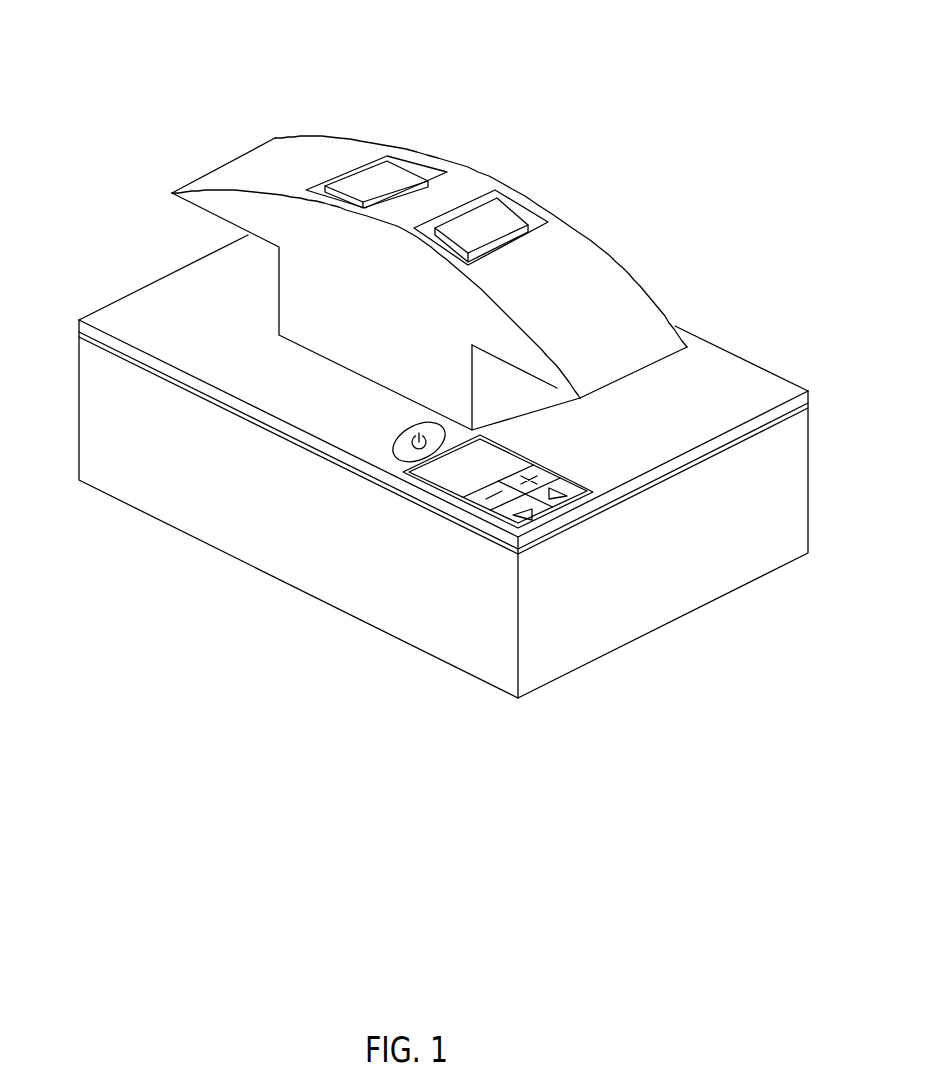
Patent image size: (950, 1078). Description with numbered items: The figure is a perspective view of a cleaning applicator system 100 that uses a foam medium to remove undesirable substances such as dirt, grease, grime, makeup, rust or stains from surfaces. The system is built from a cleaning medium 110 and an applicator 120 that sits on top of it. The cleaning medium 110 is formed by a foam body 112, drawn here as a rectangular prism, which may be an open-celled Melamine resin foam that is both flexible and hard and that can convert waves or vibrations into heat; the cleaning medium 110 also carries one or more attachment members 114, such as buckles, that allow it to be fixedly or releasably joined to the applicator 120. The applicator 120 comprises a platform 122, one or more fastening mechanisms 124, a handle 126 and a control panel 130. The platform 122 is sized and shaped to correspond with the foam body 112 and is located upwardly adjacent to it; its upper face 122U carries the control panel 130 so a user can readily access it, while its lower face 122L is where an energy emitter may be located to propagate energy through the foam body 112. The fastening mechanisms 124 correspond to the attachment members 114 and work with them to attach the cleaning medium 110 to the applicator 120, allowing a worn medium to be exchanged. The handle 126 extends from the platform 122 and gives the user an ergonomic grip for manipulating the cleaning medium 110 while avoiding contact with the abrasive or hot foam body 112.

The cleaning applicator system 100 is at (449, 367).
The cleaning medium 110 is at (479, 466).
The foam body 112 is at (413, 647).
The attachment members 114 is at (403, 170).
The applicator 120 is at (352, 283).
The platform 122 is at (479, 415).
The upper face 122U is at (765, 372).
The lower face 122L is at (720, 455).
The fastening mechanisms 124 is at (427, 233).
The handle 126 is at (200, 207).
The control panel 130 is at (565, 453).